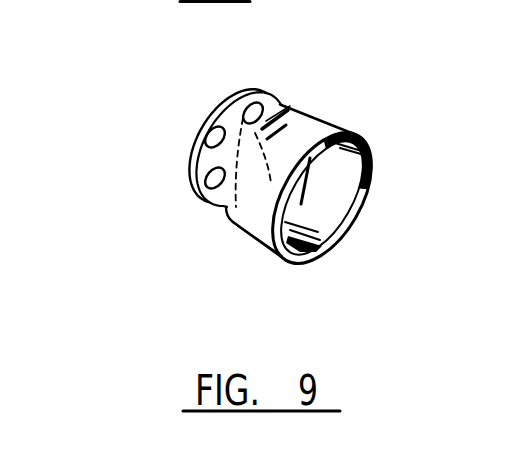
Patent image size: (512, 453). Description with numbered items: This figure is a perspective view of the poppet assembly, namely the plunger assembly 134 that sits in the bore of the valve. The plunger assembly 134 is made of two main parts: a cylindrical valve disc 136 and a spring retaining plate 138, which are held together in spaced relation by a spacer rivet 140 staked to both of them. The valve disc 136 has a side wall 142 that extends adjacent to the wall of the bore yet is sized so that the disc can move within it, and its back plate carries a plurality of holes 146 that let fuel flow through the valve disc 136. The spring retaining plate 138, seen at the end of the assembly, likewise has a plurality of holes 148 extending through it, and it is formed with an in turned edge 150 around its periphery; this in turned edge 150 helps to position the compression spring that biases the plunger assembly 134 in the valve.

The plunger assembly 134 is at (358, 256).
The cylindrical valve disc 136 is at (340, 161).
The spring retaining plate 138 is at (165, 144).
The spacer rivet 140 is at (241, 92).
The side wall 142 is at (247, 237).
The holes 146 is at (285, 186).
The holes 148 is at (207, 197).
The in turned edge 150 is at (188, 178).